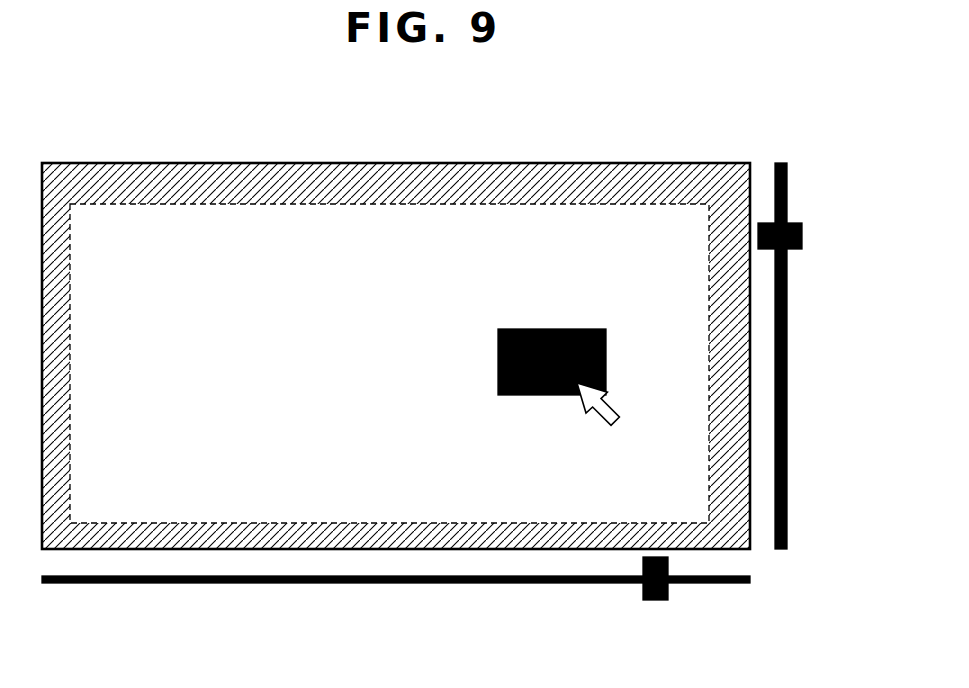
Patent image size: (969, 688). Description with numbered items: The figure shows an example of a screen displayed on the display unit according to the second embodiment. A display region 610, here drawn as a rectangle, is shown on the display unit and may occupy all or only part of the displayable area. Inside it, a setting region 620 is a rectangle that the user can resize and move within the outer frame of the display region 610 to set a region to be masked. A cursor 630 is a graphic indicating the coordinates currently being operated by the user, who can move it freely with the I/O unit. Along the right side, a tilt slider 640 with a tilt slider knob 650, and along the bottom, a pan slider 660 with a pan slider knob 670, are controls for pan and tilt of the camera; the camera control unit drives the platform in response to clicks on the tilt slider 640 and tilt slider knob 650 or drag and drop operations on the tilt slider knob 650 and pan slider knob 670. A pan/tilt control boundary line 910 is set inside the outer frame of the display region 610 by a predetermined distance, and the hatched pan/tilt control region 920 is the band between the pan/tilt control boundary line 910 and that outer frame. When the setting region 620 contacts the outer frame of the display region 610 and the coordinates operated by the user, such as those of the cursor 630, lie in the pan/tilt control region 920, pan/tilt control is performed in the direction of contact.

The display region 610 is at (566, 162).
The setting region 620 is at (505, 329).
The cursor 630 is at (618, 424).
The tilt slider 640 is at (787, 164).
The tilt slider knob 650 is at (797, 224).
The pan slider 660 is at (728, 584).
The pan slider knob 670 is at (649, 601).
The pan/tilt control boundary line 910 is at (157, 204).
The pan/tilt control region 920 is at (100, 175).